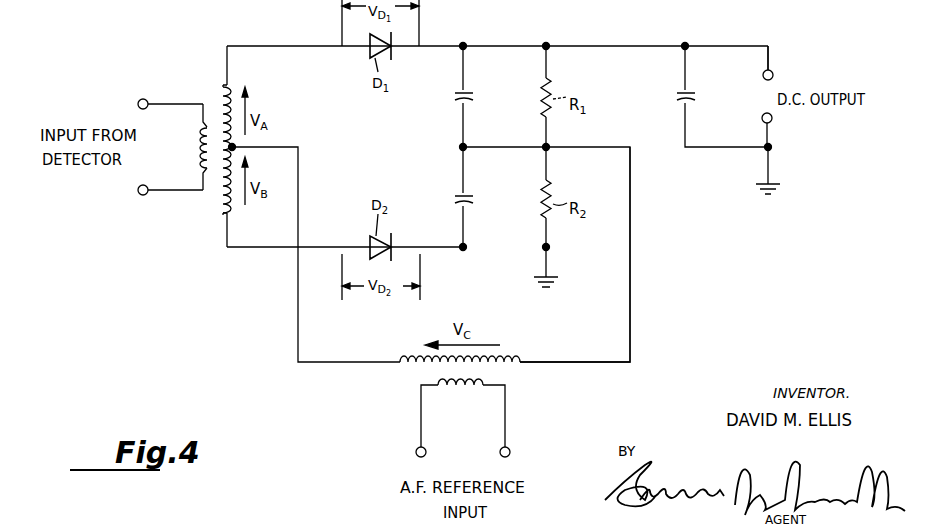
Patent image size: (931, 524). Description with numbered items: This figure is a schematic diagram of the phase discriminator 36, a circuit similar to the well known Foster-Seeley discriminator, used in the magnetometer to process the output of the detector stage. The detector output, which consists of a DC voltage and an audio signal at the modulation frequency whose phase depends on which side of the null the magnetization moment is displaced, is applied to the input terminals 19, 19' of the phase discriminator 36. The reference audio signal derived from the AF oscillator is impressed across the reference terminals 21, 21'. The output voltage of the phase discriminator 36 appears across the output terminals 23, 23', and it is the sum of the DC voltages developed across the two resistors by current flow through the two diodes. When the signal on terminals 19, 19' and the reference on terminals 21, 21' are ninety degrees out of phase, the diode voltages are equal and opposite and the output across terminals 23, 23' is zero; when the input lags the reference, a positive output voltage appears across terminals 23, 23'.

The input terminal 19 is at (169, 85).
The input terminal 19' is at (170, 211).
The reference input terminal 21 is at (409, 421).
The reference input terminal 21' is at (516, 421).
The output terminal 23 is at (785, 63).
The output terminal 23' is at (783, 153).
The phase discriminator 36 is at (668, 276).